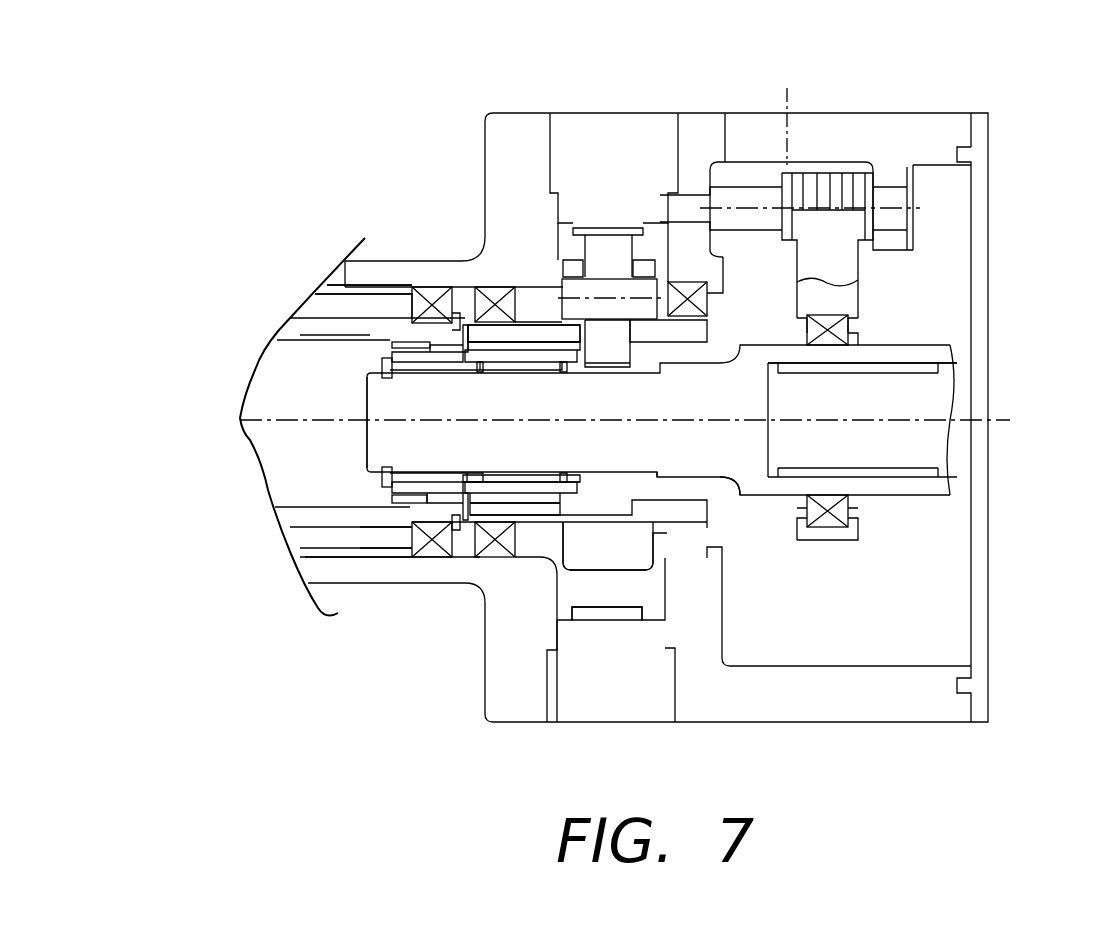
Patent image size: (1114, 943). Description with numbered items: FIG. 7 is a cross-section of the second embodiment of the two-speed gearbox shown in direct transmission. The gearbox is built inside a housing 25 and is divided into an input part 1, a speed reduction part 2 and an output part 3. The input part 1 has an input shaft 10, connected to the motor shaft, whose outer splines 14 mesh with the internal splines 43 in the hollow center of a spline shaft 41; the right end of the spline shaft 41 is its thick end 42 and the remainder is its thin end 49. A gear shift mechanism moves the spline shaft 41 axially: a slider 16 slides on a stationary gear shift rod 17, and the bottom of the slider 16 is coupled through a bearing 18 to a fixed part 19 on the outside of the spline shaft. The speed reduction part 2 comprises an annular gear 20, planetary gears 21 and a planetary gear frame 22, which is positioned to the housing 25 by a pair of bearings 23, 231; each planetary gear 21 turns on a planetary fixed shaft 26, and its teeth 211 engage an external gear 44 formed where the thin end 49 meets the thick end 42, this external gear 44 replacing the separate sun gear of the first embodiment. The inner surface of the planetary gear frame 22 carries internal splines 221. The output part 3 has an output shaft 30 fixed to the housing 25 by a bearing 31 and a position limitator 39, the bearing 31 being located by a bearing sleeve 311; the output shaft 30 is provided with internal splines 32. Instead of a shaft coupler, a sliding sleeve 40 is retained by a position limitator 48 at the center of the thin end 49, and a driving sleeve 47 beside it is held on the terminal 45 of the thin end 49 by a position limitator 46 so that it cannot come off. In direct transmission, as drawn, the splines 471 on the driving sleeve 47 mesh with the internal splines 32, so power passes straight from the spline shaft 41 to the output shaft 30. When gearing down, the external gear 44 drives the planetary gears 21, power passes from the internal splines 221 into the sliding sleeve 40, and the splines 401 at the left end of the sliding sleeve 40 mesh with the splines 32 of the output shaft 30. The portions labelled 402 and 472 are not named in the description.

The input part 1 is at (988, 392).
The speed reduction part 2 is at (620, 112).
The output part 3 is at (262, 344).
The input shaft 10 is at (945, 447).
The outer splines of the input shaft 14 is at (868, 470).
The slider 16 is at (832, 183).
The gear shift rod 17 is at (752, 193).
The bearing 18 is at (828, 325).
The fixed part 19 is at (858, 334).
The annular gear 20 is at (637, 217).
The planetary gear 21 is at (593, 243).
The planetary gear frame 22 is at (570, 268).
The internal splines of the planetary gear frame 221 is at (478, 333).
The bearing 23 is at (706, 298).
The housing 25 is at (521, 119).
The planetary fixed shaft 26 is at (600, 262).
The output shaft 30 is at (300, 335).
The bearing 31 is at (405, 310).
The bearing sleeve 311 is at (400, 305).
The internal splines of the output shaft 32 is at (388, 342).
The position limitator 39 is at (405, 300).
The sliding sleeve 40 is at (510, 495).
The splines at the left end of the sliding sleeve 401 is at (485, 545).
The sleeve bore 402 is at (500, 483).
The spline shaft 41 is at (938, 344).
The thick end of the spline shaft 42 is at (917, 487).
The internal splines of the spline shaft 43 is at (772, 478).
The external gear 44 is at (705, 478).
The terminal of the spline shaft's thin end 45 is at (382, 480).
The position limitator 46 is at (395, 495).
The driving sleeve 47 is at (375, 510).
The splines of the driving sleeve 471 is at (405, 478).
The bearing flange 472 is at (335, 512).
The position limitator 48 is at (598, 522).
The thin end of the spline shaft 49 is at (377, 440).
The teeth of the planetary gear 211 is at (605, 300).
The bearing 231 is at (497, 555).